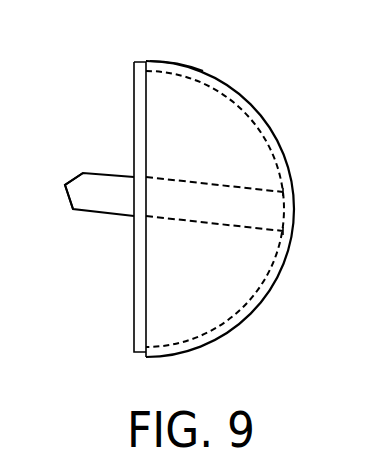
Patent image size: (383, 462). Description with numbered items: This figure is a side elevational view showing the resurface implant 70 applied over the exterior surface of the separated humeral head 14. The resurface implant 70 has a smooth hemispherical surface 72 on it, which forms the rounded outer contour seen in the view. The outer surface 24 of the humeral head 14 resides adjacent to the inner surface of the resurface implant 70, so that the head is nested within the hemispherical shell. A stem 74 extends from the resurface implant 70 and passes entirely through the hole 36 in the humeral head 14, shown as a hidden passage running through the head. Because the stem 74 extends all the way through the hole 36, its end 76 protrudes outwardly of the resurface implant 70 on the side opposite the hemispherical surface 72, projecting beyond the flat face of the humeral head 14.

The humeral head 14 is at (258, 273).
The outer surface 24 is at (242, 93).
The hole 36 is at (185, 178).
The resurface implant 70 is at (278, 126).
The smooth hemispherical surface 72 is at (202, 70).
The stem 74 is at (102, 189).
The end 76 is at (76, 207).